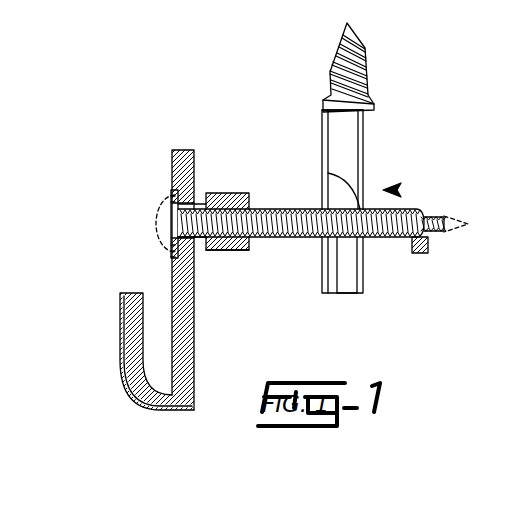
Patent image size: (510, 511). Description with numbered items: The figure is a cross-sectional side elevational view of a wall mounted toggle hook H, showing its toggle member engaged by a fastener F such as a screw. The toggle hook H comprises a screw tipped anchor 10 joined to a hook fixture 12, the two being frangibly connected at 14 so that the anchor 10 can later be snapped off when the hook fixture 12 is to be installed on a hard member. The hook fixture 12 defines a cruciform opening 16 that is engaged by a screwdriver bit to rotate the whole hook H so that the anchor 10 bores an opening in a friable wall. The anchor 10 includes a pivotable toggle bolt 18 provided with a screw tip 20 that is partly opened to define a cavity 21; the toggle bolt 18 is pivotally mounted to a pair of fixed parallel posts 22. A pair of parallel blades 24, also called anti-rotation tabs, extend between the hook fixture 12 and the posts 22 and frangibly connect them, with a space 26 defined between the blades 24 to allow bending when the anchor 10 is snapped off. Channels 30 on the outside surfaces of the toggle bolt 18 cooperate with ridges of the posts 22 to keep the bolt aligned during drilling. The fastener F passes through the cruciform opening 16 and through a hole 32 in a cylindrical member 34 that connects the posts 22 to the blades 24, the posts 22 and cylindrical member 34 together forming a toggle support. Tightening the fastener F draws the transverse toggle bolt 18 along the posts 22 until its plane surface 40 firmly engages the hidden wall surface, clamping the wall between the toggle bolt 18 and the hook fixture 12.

The screw tipped anchor 10 is at (467, 303).
The hook fixture 12 is at (143, 401).
The frangible connection 14 is at (196, 210).
The cruciform opening 16 is at (172, 265).
The toggle bolt 18 is at (362, 165).
The screw tip 20 is at (357, 45).
The cavity 21 is at (325, 100).
The posts 22 is at (337, 193).
The blades 24 is at (274, 209).
The space 26 is at (200, 240).
The channels 30 is at (343, 273).
The hole 32 is at (252, 249).
The cylindrical member 34 is at (231, 193).
The plane surface 40 is at (322, 137).
The toggle hook H is at (141, 119).
The fastener F is at (161, 198).